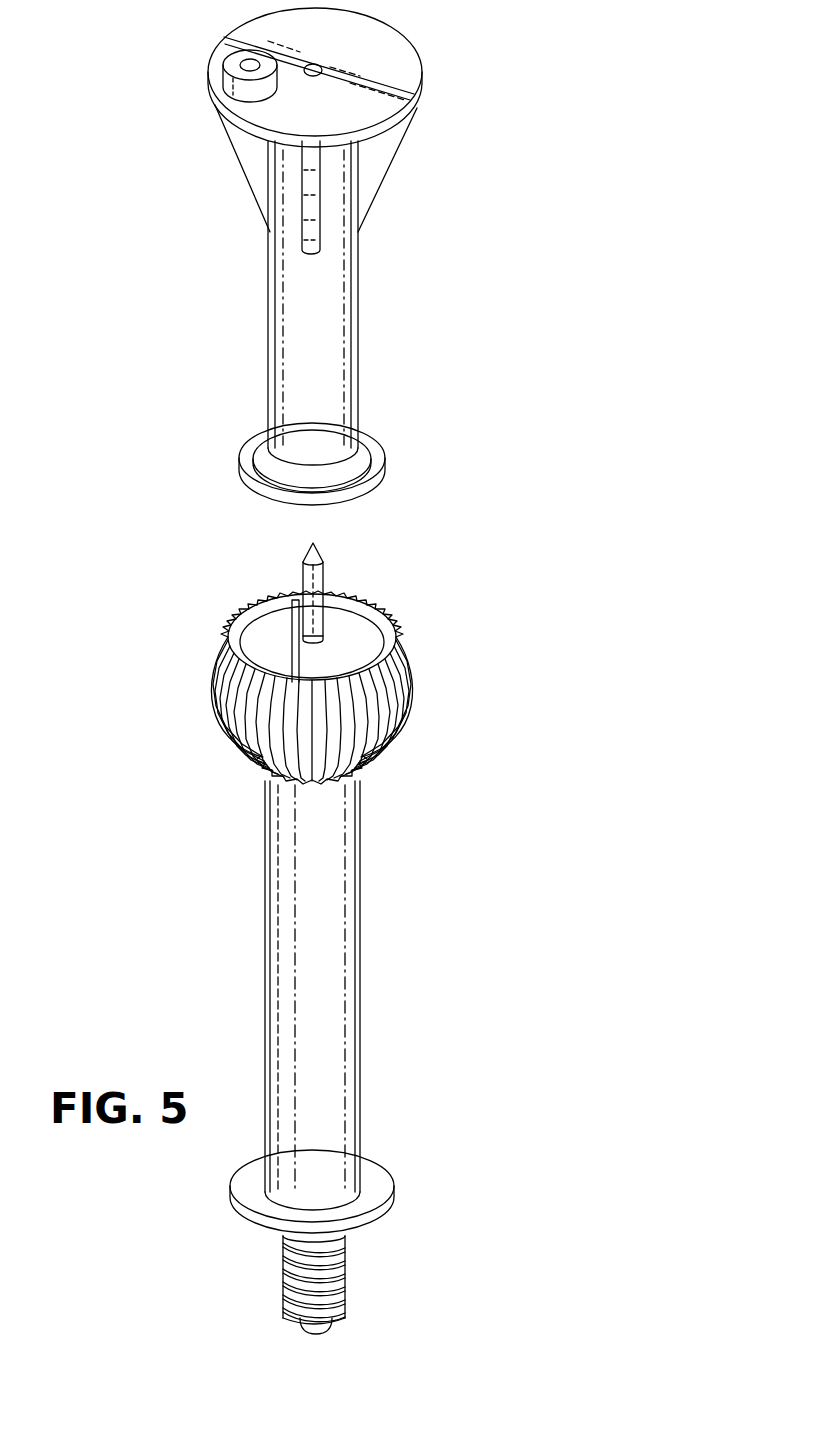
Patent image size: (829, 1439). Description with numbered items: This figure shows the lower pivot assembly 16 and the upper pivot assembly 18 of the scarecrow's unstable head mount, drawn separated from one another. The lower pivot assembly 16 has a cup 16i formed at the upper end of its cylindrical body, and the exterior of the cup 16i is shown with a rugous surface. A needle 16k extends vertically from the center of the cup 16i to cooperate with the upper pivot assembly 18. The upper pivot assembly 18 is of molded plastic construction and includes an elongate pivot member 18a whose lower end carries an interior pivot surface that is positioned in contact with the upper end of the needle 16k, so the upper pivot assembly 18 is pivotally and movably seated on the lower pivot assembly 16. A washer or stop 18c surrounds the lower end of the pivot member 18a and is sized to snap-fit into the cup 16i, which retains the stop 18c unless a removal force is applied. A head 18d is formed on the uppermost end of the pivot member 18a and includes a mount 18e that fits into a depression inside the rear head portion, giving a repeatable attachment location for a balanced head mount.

The lower pivot assembly 16 is at (238, 943).
The cup 16i is at (410, 658).
The needle 16k is at (324, 581).
The upper pivot assembly 18 is at (238, 318).
The elongate pivot member 18a is at (343, 325).
The washer or stop 18c is at (387, 458).
The head 18d is at (422, 64).
The mount 18e is at (231, 80).